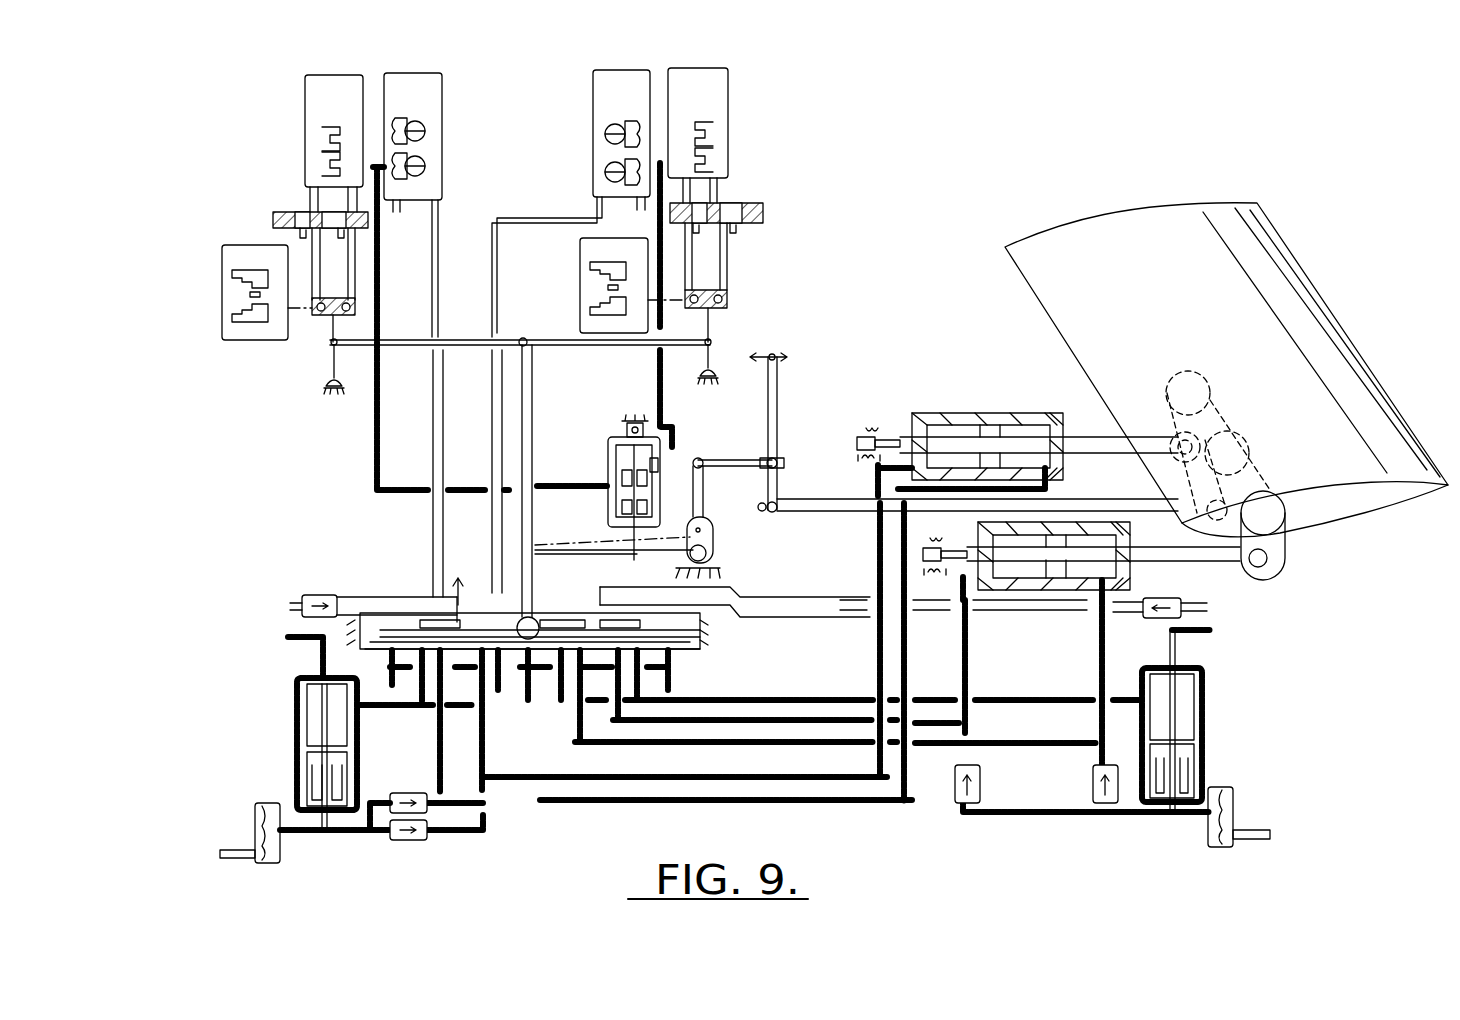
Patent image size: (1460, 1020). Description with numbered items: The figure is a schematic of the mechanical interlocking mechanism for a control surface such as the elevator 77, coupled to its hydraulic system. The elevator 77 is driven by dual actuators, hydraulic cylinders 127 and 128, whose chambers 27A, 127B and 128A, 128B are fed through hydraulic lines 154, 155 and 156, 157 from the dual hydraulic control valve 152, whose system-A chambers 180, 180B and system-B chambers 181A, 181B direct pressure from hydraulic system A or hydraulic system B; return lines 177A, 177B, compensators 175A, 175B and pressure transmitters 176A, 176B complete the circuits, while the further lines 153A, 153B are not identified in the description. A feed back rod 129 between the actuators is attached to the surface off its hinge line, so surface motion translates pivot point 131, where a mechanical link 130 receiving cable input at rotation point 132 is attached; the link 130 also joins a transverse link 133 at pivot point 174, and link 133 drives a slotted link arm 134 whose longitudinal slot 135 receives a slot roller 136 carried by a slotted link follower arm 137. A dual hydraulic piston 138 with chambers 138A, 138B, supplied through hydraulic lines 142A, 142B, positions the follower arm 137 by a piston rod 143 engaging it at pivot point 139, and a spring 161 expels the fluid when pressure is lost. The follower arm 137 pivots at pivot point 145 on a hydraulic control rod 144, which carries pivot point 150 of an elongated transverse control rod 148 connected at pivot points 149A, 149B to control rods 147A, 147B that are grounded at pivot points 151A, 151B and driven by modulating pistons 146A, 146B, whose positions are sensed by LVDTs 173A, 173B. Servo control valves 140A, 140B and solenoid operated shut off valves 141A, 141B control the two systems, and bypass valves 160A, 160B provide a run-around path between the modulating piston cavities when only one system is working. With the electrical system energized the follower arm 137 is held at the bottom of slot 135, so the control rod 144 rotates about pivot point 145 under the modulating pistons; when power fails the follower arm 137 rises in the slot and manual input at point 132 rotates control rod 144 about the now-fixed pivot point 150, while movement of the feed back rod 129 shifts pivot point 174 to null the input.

The elevator 77 is at (1135, 200).
The servo control valve 140A is at (305, 135).
The solenoid operated shut off valve 141A is at (442, 100).
The solenoid operated shut off valve 141B is at (593, 130).
The servo control valve 140B is at (728, 112).
The bypass valve 160A is at (273, 217).
The bypass valve 160B is at (763, 210).
The LVDT 173A is at (240, 245).
The LVDT 173B is at (580, 265).
The modulating piston 146A is at (350, 300).
The modulating piston 146B is at (727, 280).
The control rod 147A is at (330, 318).
The control rod 147B is at (712, 312).
The elongated transverse control rod 148 is at (443, 340).
The pivot point 150 is at (525, 338).
The pivot point 149A is at (330, 346).
The pivot point 149B is at (712, 338).
The pivot point 151A is at (322, 382).
The pivot point 151B is at (716, 375).
The hydraulic line 142A is at (377, 462).
The hydraulic line 142B is at (658, 375).
The hydraulic control rod 144 is at (532, 390).
The pivot point 145 is at (512, 555).
The dual hydraulic piston 138 is at (608, 440).
The hydraulic piston chamber 138A is at (627, 430).
The hydraulic piston chamber 138B is at (660, 468).
The piston rod 143 is at (615, 535).
The transverse link 133 is at (708, 462).
The slotted link arm 134 is at (704, 492).
The spring 161 is at (713, 520).
The longitudinal slot 135 is at (706, 540).
The slot roller 136 is at (712, 560).
The mechanical link 130 is at (777, 402).
The rotation point 132 is at (773, 355).
The pivot point 174 is at (778, 458).
The pivot point 131 is at (778, 510).
The feed back rod 129 is at (1065, 500).
The hydraulic cylinder 127 is at (972, 412).
The hydraulic cylinder chamber 27A is at (938, 412).
The hydraulic cylinder chamber 127B is at (1012, 425).
The hydraulic line 156 is at (860, 435).
The hydraulic cylinder 128 is at (1130, 575).
The hydraulic cylinder chamber 128A is at (1005, 545).
The hydraulic cylinder chamber 128B is at (1285, 513).
The dual hydraulic control valve 152 is at (340, 597).
The control valve chamber 180B is at (440, 598).
The control valve chamber 180 is at (478, 573).
The control valve chamber 181A is at (733, 590).
The control valve chamber 181B is at (528, 625).
The slotted link follower arm 137 is at (598, 615).
The pivot point 139 is at (680, 590).
The return line 177A is at (500, 680).
The return line 177B is at (720, 698).
The hydraulic line 153A is at (447, 705).
The hydraulic line 153B is at (580, 745).
The hydraulic line 154 is at (888, 648).
The hydraulic line 155 is at (910, 660).
The hydraulic line 157 is at (1108, 645).
The compensator 175A is at (297, 708).
The compensator 175B is at (1202, 702).
The pressure transmitter 176A is at (270, 803).
The pressure transmitter 176B is at (1220, 800).
The hydraulic system B is at (1038, 606).